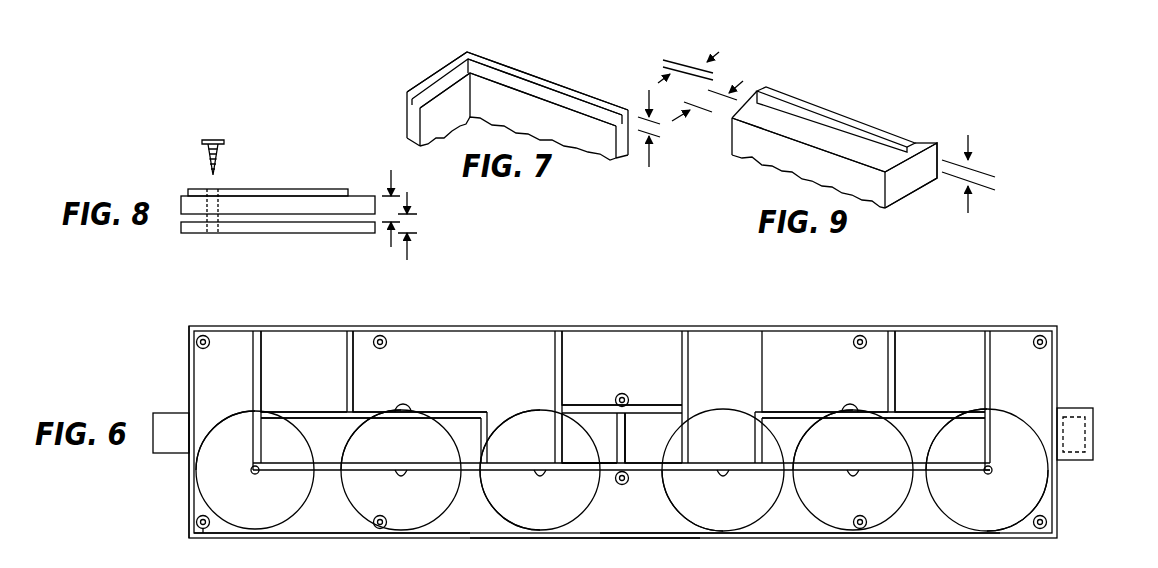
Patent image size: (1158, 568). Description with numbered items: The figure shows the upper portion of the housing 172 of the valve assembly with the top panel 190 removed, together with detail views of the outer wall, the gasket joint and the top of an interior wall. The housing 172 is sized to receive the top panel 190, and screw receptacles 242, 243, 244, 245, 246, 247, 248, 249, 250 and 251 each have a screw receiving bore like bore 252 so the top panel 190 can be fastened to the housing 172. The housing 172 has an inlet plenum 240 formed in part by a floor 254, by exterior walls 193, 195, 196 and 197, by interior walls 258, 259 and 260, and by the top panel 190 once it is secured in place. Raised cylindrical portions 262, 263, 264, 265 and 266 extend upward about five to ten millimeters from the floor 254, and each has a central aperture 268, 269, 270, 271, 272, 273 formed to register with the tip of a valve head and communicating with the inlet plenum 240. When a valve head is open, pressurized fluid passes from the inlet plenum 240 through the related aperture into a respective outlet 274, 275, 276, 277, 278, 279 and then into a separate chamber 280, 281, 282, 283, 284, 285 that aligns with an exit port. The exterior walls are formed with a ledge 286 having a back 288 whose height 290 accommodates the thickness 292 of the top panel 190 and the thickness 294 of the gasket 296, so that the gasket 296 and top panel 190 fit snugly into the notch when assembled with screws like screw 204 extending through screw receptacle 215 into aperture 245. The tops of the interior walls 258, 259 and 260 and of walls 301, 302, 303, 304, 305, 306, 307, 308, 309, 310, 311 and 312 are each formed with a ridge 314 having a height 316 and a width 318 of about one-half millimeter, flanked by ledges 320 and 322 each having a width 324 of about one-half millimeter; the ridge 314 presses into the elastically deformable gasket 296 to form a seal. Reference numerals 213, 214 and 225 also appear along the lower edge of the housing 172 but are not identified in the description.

In FIG. 6, the housing 172 is at (188, 352).
In FIG. 8, the top panel 190 is at (320, 192).
In FIG. 6, the exterior wall 193 is at (1057, 483).
In FIG. 7, the exterior wall 195 is at (447, 112).
In FIG. 6, the exterior wall 195 is at (188, 405).
In FIG. 6, the exterior wall 196 is at (570, 540).
In FIG. 7, the exterior wall 197 is at (530, 120).
In FIG. 8, the screw 204 is at (200, 146).
In FIG. 6, the rail section 213 is at (867, 567).
In FIG. 6, the rail section 214 is at (383, 567).
In FIG. 8, the screw receptacle 215 is at (212, 189).
In FIG. 6, the screw receptacle 215 is at (208, 567).
In FIG. 6, the rail section 225 is at (670, 567).
In FIG. 6, the inlet plenum 240 is at (235, 370).
In FIG. 6, the screw receptacle 242 is at (1043, 335).
In FIG. 6, the screw receptacle 243 is at (861, 335).
In FIG. 6, the screw receptacle 244 is at (381, 335).
In FIG. 9, the screw receptacle 245 is at (903, 178).
In FIG. 6, the screw receptacle 245 is at (203, 335).
In FIG. 6, the screw receptacle 246 is at (204, 530).
In FIG. 6, the screw receptacle 247 is at (217, 427).
In FIG. 6, the screw receptacle 248 is at (867, 522).
In FIG. 6, the screw receptacle 249 is at (373, 519).
In FIG. 6, the screw receptacle 250 is at (622, 485).
In FIG. 6, the screw receptacle 251 is at (621, 393).
In FIG. 6, the screw receiving bore 252 is at (197, 517).
In FIG. 6, the floor 254 is at (1023, 423).
In FIG. 6, the interior wall 258 is at (997, 372).
In FIG. 6, the interior wall 259 is at (500, 427).
In FIG. 6, the interior wall 260 is at (250, 376).
In FIG. 6, the raised cylindrical portion 262 is at (1037, 503).
In FIG. 6, the raised cylindrical portion 263 is at (802, 432).
In FIG. 6, the raised cylindrical portion 264 is at (673, 508).
In FIG. 6, the raised cylindrical portion 265 is at (497, 512).
In FIG. 6, the raised cylindrical portion 266 is at (470, 440).
In FIG. 6, the central aperture 268 is at (990, 475).
In FIG. 6, the central aperture 269 is at (854, 476).
In FIG. 6, the central aperture 270 is at (724, 476).
In FIG. 6, the central aperture 271 is at (541, 476).
In FIG. 6, the central aperture 272 is at (402, 476).
In FIG. 6, the central aperture 273 is at (256, 475).
In FIG. 6, the outlet 274 is at (268, 443).
In FIG. 6, the outlet 275 is at (397, 410).
In FIG. 6, the outlet 276 is at (577, 462).
In FIG. 6, the outlet 277 is at (664, 457).
In FIG. 6, the outlet 278 is at (847, 388).
In FIG. 6, the outlet 279 is at (968, 455).
In FIG. 6, the chamber 280 is at (322, 437).
In FIG. 6, the chamber 281 is at (500, 360).
In FIG. 6, the chamber 282 is at (592, 437).
In FIG. 6, the chamber 283 is at (662, 435).
In FIG. 6, the chamber 284 is at (793, 358).
In FIG. 6, the chamber 285 is at (915, 427).
In FIG. 7, the ledge 286 is at (590, 122).
In FIG. 7, the back 288 is at (573, 100).
In FIG. 7, the height 290 is at (650, 155).
In FIG. 8, the thickness 292 is at (392, 167).
In FIG. 8, the thickness 294 is at (409, 200).
In FIG. 8, the gasket 296 is at (330, 234).
In FIG. 6, the wall 301 is at (897, 365).
In FIG. 6, the wall 302 is at (927, 410).
In FIG. 6, the wall 303 is at (763, 410).
In FIG. 6, the wall 304 is at (753, 453).
In FIG. 6, the wall 305 is at (689, 375).
In FIG. 6, the wall 306 is at (643, 407).
In FIG. 6, the wall 307 is at (623, 433).
In FIG. 6, the wall 308 is at (553, 378).
In FIG. 6, the wall 309 is at (455, 425).
In FIG. 6, the wall 310 is at (356, 380).
In FIG. 6, the wall 311 is at (295, 410).
In FIG. 6, the wall 312 is at (510, 463).
In FIG. 9, the ridge 314 is at (793, 112).
In FIG. 9, the height 316 is at (970, 145).
In FIG. 9, the width 318 is at (716, 53).
In FIG. 9, the ledge 320 is at (878, 122).
In FIG. 9, the ledge 322 is at (763, 120).
In FIG. 9, the width 324 is at (743, 81).